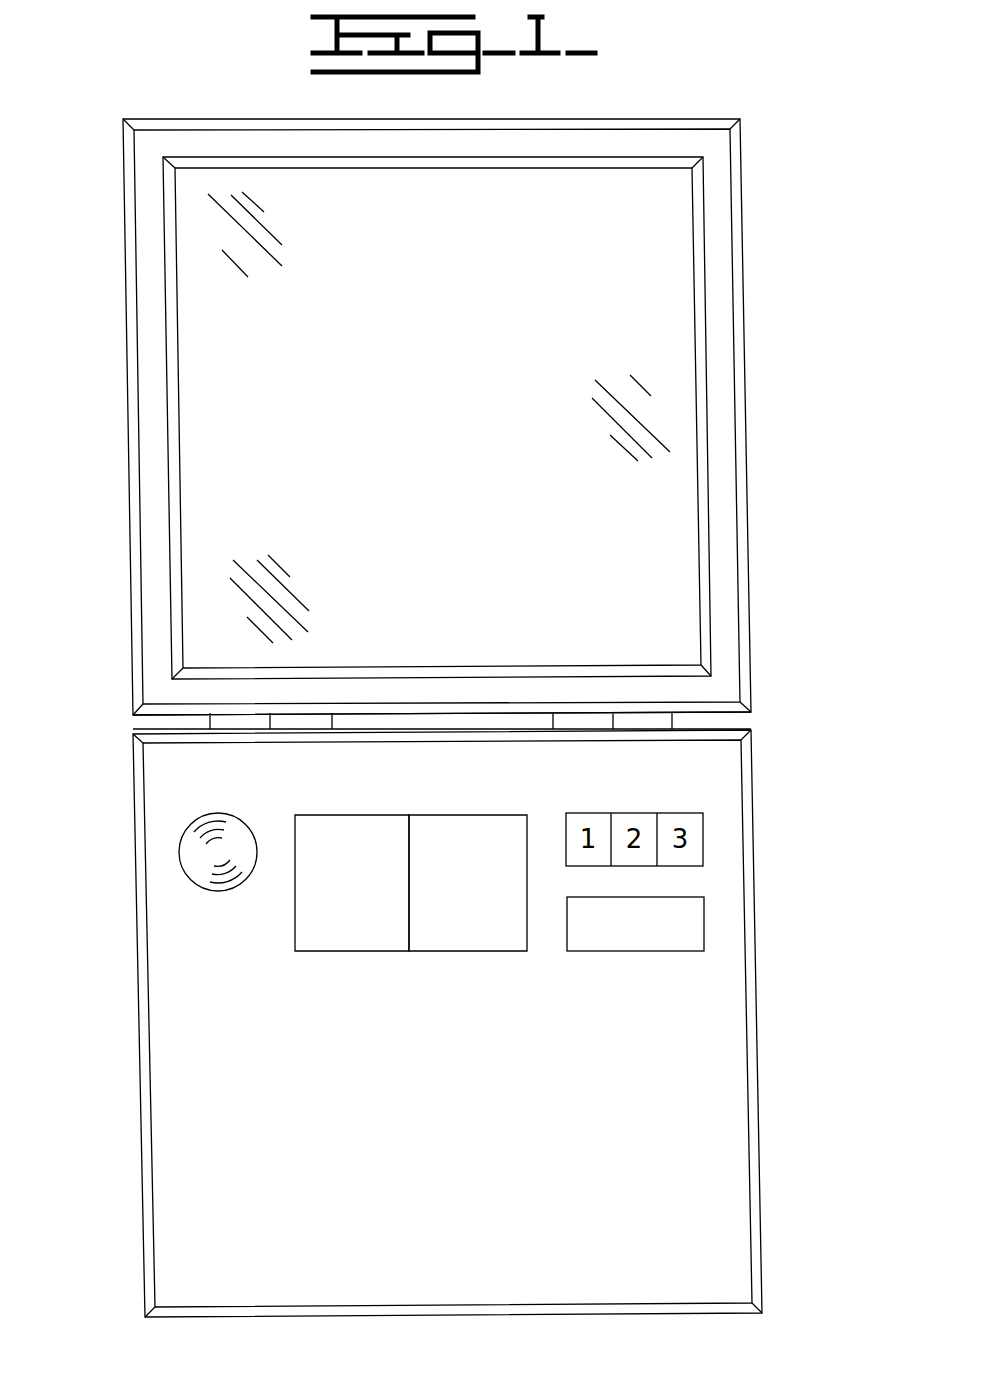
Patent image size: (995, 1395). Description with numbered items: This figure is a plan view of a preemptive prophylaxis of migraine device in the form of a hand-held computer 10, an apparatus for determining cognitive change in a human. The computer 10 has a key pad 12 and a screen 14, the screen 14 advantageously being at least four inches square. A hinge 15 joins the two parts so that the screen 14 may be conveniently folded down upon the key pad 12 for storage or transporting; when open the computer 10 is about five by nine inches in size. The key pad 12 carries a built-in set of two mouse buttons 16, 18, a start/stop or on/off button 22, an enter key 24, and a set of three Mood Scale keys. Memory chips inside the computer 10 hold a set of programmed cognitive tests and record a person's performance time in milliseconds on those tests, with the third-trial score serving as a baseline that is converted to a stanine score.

The hand-held computer 10 is at (733, 104).
The key pad 12 is at (468, 1082).
The screen 14 is at (438, 463).
The hinge 15 is at (672, 725).
The mouse button 16 is at (370, 895).
The mouse button 18 is at (488, 895).
The start/stop or on/off button 22 is at (189, 827).
The enter key 24 is at (704, 924).